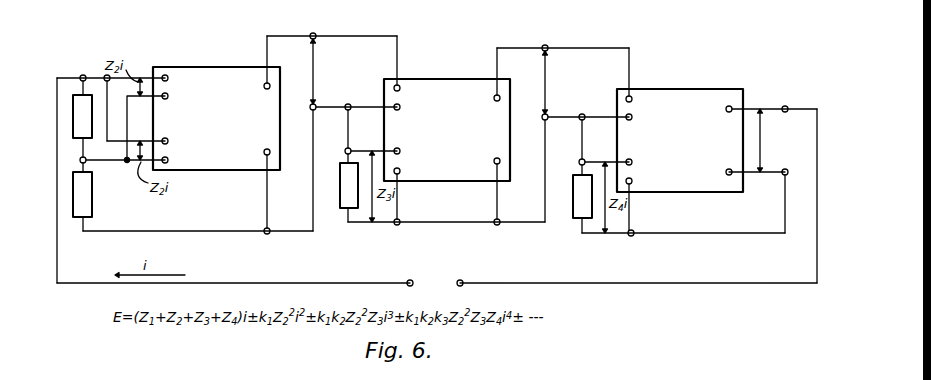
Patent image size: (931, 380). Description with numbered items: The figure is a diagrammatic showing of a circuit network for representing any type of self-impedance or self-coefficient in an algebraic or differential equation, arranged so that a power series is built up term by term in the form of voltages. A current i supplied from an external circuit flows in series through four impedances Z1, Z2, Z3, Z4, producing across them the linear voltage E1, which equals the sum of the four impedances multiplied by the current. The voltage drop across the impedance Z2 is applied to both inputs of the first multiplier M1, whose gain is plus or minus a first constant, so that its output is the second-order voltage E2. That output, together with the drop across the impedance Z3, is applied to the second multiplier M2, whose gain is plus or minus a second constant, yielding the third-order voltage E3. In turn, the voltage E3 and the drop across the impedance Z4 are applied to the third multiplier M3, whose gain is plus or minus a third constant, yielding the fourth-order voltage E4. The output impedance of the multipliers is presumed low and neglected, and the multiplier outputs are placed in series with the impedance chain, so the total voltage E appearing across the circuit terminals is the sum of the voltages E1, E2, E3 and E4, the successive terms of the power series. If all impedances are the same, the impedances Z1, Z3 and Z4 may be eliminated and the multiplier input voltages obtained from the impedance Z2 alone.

The impedance Z1 is at (82, 194).
The impedance Z2 is at (82, 116).
The impedance Z3 is at (349, 185).
The impedance Z4 is at (582, 196).
The multiplier M1 is at (216, 112).
The multiplier M2 is at (447, 123).
The multiplier M3 is at (680, 134).
The voltage across the circuit terminals E is at (437, 283).
The linear voltage term E1 is at (398, 246).
The second-order voltage term E2 is at (310, 62).
The third-order voltage term E3 is at (543, 80).
The fourth-order voltage term E4 is at (762, 108).